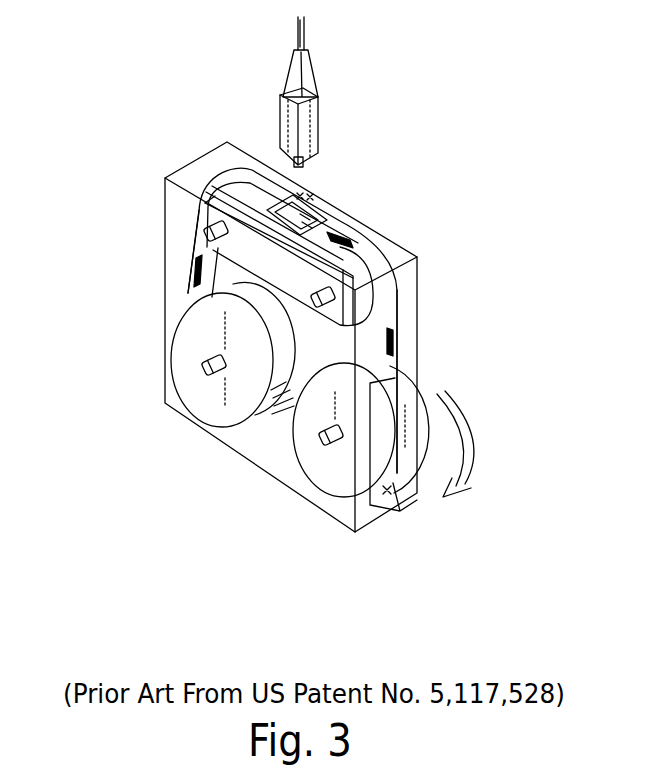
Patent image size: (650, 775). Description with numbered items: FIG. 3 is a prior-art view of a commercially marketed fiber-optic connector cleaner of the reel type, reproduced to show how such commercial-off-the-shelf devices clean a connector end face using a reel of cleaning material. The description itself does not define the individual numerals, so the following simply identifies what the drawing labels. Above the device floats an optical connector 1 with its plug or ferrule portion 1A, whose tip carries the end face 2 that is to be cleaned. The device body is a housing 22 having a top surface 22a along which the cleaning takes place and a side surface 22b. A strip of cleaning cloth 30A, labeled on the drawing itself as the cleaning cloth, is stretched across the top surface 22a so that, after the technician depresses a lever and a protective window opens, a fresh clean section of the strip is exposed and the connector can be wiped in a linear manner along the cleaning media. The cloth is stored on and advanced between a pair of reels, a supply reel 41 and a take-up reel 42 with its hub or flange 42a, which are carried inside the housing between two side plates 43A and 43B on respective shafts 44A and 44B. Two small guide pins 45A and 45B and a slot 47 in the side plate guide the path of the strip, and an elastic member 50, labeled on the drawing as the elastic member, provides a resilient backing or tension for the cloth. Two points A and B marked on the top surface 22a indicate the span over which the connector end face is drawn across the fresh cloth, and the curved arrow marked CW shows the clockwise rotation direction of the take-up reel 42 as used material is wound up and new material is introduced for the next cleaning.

The optical connector 1 is at (341, 91).
The connector ferrule housing 1A is at (313, 135).
The ferrule end face 2 is at (304, 163).
The housing 22 is at (362, 286).
The housing top surface 22a is at (318, 201).
The housing side surface 22b is at (387, 382).
The cleaning cloth 30A is at (360, 247).
The supply reel 41 is at (238, 413).
The take-up reel 42 is at (340, 470).
The take-up reel shaft 42a is at (389, 492).
The side plate 43A is at (214, 177).
The side plate 43B is at (405, 285).
The reel shaft 44A is at (203, 368).
The reel shaft 44B is at (322, 438).
The guide pin 45A is at (206, 230).
The guide pin 45B is at (336, 302).
The slot 47 is at (394, 325).
The elastic member 50 is at (212, 214).
The point A is at (316, 188).
The point B is at (304, 185).
The clockwise rotation direction CW is at (463, 450).